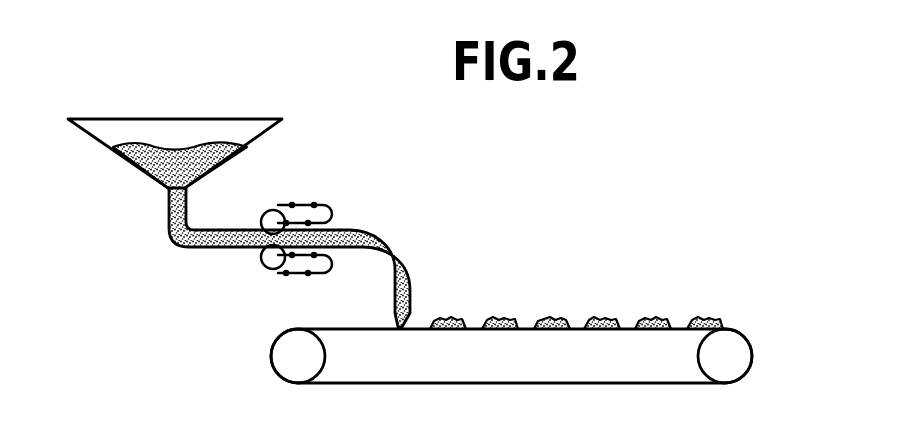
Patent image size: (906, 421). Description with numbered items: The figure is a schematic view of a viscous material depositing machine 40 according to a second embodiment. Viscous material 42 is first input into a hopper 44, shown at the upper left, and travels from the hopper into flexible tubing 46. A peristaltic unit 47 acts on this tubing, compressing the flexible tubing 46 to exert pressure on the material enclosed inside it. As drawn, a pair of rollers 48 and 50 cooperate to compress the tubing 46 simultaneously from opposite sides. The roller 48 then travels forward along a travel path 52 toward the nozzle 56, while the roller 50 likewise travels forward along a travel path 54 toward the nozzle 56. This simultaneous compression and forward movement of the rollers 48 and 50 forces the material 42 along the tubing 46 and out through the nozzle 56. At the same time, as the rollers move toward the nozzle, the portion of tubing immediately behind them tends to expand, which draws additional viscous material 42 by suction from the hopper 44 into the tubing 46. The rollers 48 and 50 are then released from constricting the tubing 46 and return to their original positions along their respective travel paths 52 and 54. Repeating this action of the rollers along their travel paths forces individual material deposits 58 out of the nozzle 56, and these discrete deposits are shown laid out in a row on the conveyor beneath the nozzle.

The viscous material depositing machine 40 is at (524, 185).
The viscous material 42 is at (166, 146).
The hopper 44 is at (243, 117).
The flexible tubing 46 is at (218, 228).
The peristaltic unit 47 is at (370, 210).
The roller 48 is at (277, 209).
The roller 50 is at (262, 257).
The travel path 52 is at (333, 213).
The travel path 54 is at (308, 275).
The nozzle 56 is at (411, 311).
The individual material deposits 58 is at (507, 318).